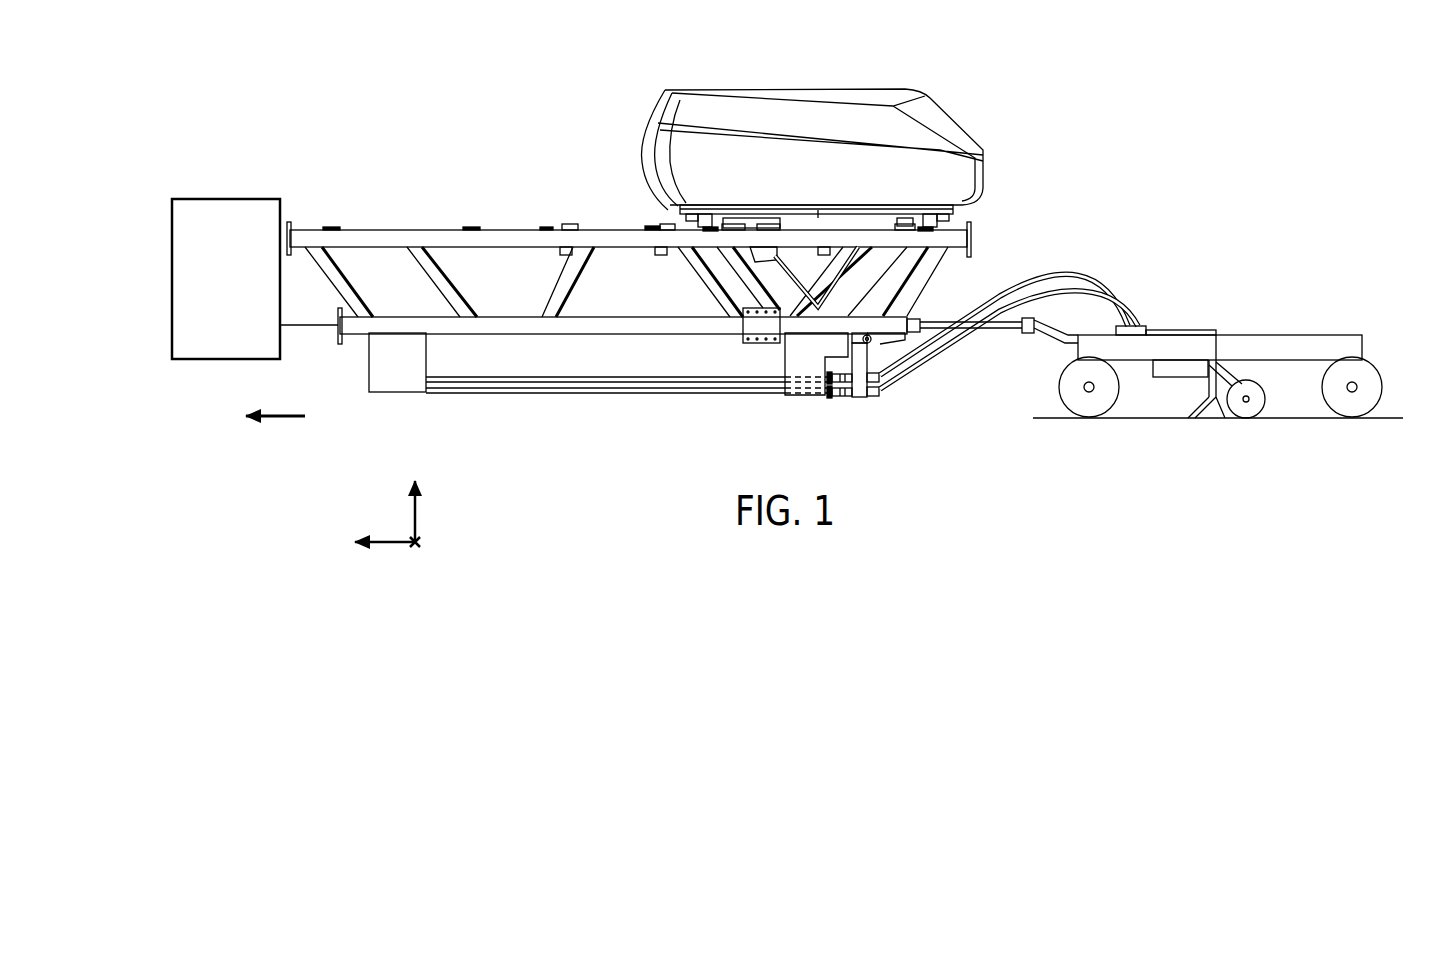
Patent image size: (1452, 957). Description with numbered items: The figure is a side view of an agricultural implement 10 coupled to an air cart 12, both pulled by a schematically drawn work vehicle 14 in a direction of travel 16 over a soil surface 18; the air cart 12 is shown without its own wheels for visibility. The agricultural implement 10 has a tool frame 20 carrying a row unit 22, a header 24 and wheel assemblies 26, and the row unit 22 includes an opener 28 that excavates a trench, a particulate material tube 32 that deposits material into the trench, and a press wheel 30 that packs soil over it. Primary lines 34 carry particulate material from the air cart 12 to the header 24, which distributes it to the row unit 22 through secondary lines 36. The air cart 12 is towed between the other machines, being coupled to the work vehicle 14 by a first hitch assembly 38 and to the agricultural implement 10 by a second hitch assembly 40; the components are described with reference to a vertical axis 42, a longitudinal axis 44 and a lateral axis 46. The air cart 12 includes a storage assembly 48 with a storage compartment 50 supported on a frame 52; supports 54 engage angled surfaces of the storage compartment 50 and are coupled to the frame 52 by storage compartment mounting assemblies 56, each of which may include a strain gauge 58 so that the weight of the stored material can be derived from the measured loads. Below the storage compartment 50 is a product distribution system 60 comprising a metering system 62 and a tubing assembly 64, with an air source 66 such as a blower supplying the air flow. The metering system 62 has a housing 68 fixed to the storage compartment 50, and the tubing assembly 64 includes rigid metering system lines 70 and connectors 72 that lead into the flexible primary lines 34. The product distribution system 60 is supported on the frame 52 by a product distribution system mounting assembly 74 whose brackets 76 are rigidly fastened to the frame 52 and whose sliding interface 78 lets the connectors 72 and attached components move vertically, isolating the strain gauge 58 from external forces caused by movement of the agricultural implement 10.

The agricultural implement 10 is at (1230, 262).
The air cart 12 is at (908, 56).
The work vehicle 14 is at (225, 199).
The direction of travel 16 is at (280, 416).
The soil surface 18 is at (1040, 419).
The tool frame 20 is at (1303, 335).
The row unit 22 is at (1160, 425).
The header 24 is at (1142, 325).
The wheel assemblies 26 is at (1068, 419).
The opener 28 is at (1195, 419).
The press wheel 30 is at (1262, 419).
The particulate material tube 32 is at (1222, 419).
The primary lines 34 is at (1122, 315).
The secondary lines 36 is at (1203, 330).
The first hitch assembly 38 is at (300, 205).
The second hitch assembly 40 is at (1028, 349).
The vertical axis 42 is at (415, 515).
The longitudinal axis 44 is at (388, 537).
The lateral axis 46 is at (422, 546).
The storage assembly 48 is at (989, 126).
The storage compartment 50 is at (935, 113).
The frame 52 is at (945, 263).
The supports 54 is at (953, 212).
The storage compartment mounting assemblies 56 is at (703, 213).
The strain gauge 58 is at (712, 213).
The product distribution system 60 is at (793, 404).
The metering system 62 is at (740, 352).
The tubing assembly 64 is at (924, 381).
The air source 66 is at (400, 392).
The housing 68 is at (787, 352).
The metering system lines 70 is at (833, 394).
The connectors 72 is at (880, 388).
The product distribution system mounting assembly 74 is at (882, 353).
The brackets 76 is at (870, 397).
The sliding interface 78 is at (846, 364).